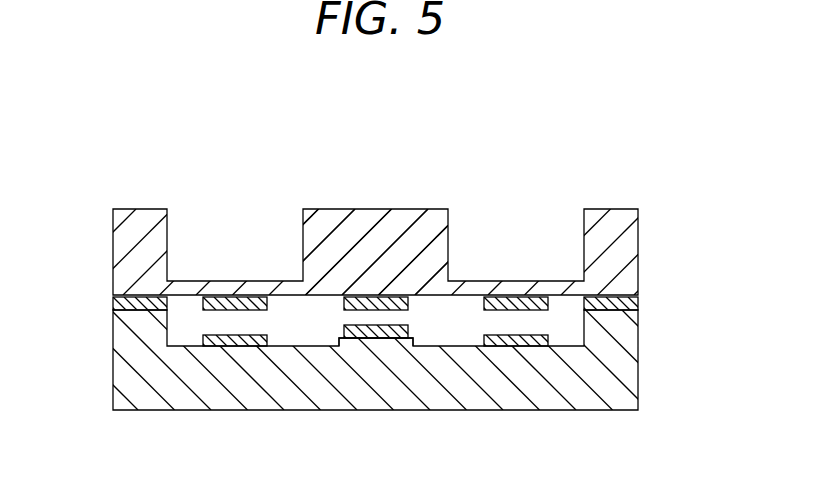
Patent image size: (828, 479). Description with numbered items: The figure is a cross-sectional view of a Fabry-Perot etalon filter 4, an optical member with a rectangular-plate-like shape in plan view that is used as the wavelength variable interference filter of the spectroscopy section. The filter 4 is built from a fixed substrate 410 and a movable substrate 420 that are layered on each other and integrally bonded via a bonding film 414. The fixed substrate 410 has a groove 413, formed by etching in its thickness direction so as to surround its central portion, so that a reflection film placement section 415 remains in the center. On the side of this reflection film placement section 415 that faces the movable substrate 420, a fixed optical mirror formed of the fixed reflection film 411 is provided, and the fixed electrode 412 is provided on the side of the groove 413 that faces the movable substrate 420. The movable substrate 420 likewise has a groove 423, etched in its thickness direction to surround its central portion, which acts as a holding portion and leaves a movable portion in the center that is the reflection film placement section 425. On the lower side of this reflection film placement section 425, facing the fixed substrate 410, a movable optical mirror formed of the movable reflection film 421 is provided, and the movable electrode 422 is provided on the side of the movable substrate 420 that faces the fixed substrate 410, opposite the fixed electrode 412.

The Fabry-Perot etalon filter 4 is at (614, 133).
The fixed substrate 410 is at (128, 359).
The fixed reflection film 411 is at (395, 347).
The fixed electrode 412 is at (518, 346).
The groove 413 is at (303, 346).
The bonding film 414 is at (638, 301).
The reflection film placement section 415 is at (385, 338).
The movable substrate 420 is at (128, 249).
The movable reflection film 421 is at (376, 297).
The movable electrode 422 is at (512, 297).
The groove 423 is at (233, 281).
The reflection film placement section 425 is at (337, 209).